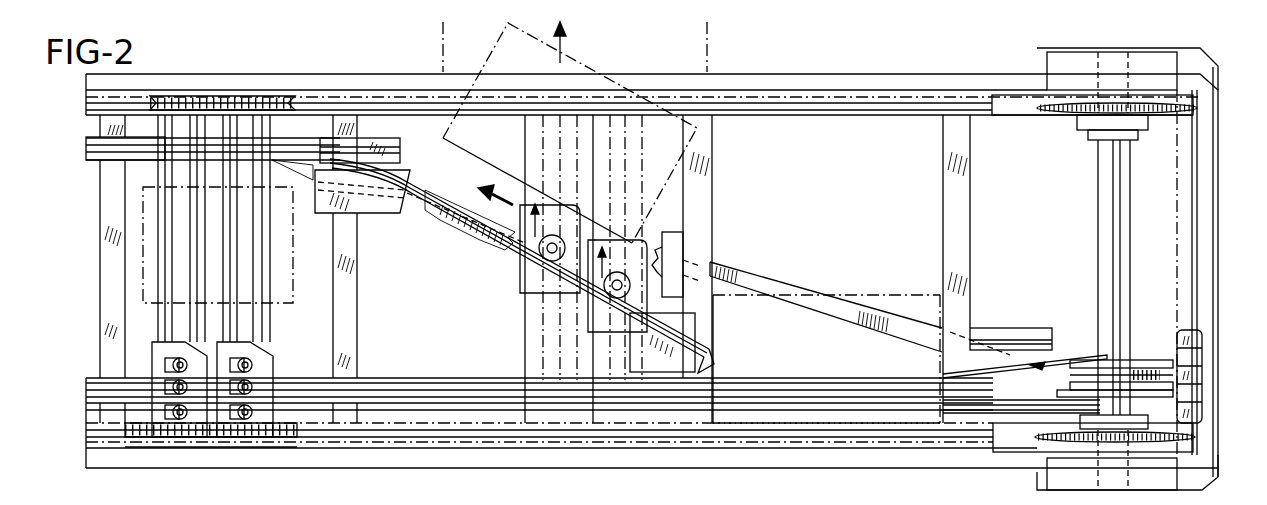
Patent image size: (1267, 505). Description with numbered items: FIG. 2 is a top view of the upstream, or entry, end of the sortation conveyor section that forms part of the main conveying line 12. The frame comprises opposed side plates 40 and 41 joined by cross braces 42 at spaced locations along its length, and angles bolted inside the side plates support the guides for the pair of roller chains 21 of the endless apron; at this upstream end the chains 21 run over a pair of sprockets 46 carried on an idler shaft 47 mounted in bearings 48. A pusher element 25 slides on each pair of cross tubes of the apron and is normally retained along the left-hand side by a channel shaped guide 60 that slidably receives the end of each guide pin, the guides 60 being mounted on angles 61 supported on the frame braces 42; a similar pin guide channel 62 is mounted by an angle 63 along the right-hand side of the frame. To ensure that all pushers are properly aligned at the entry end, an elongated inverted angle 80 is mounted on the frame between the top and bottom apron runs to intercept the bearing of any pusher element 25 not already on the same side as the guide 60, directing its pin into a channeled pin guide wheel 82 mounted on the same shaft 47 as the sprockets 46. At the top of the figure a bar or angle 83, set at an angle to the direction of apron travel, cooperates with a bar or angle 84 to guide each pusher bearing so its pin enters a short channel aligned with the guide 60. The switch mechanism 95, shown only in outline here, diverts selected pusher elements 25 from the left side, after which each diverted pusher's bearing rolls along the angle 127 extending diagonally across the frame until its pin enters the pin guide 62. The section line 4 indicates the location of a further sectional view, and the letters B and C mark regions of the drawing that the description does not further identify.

The main conveying line 12 is at (310, 74).
The roller chains 21 is at (232, 107).
The pusher element 25 is at (590, 330).
The side plate 40 is at (898, 466).
The side plate 41 is at (878, 80).
The cross braces 42 is at (353, 283).
The sprockets 46 is at (1050, 116).
The idler shaft 47 is at (1110, 192).
The bearings 48 is at (1062, 60).
The channel shaped guide 60 is at (425, 393).
The angles 61 is at (492, 415).
The pin guide channel 62 is at (96, 137).
The angle 63 is at (135, 140).
The inverted angle 80 is at (840, 312).
The pin guide wheel 82 is at (1185, 330).
The bar or angle 83 is at (1083, 353).
The bar or angle 84 is at (1013, 415).
The switch mechanism 95 is at (892, 383).
The angle 127 is at (482, 252).
The section line 4- 4 is at (797, 62).
The position B is at (458, 163).
The carriage C is at (296, 285).